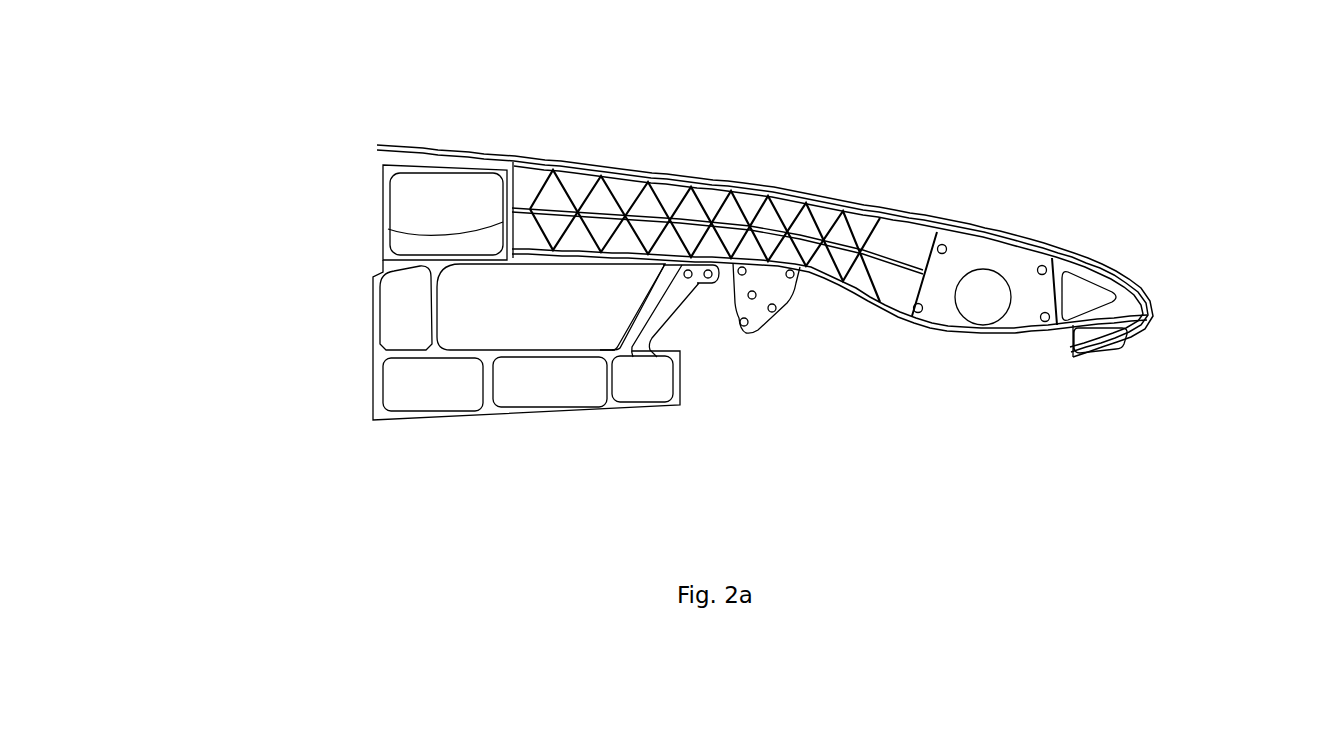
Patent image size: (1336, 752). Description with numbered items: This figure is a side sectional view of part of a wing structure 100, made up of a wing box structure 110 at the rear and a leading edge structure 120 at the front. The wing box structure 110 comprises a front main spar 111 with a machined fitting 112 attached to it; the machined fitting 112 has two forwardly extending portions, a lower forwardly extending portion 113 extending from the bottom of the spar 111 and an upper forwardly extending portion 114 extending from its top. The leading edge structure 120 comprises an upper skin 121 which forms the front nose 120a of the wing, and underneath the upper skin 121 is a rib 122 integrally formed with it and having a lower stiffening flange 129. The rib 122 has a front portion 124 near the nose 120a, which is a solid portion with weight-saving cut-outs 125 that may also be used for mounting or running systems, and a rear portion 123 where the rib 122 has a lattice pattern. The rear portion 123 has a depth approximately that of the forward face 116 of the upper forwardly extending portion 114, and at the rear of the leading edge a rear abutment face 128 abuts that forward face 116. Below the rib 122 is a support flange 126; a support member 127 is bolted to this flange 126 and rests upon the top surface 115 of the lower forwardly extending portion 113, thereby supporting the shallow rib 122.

The wing structure 100 is at (992, 138).
The wing box structure 110 is at (447, 442).
The front main spar 111 is at (375, 342).
The machined fitting 112 is at (400, 398).
The lower forwardly extending portion 113 is at (577, 395).
The upper forwardly extending portion 114 is at (440, 187).
The top surface 115 is at (528, 350).
The forward face 116 is at (388, 229).
The leading edge structure 120 is at (889, 366).
The front nose 120a is at (1152, 311).
The upper skin 121 is at (563, 157).
The rib 122 is at (1023, 317).
The rear portion 123 is at (720, 195).
The front portion 124 is at (1045, 243).
The cut-outs 125 is at (970, 316).
The support flange 126 is at (763, 320).
The support member 127 is at (670, 308).
The rear abutment face 128 is at (498, 153).
The lower stiffening flange 129 is at (862, 302).